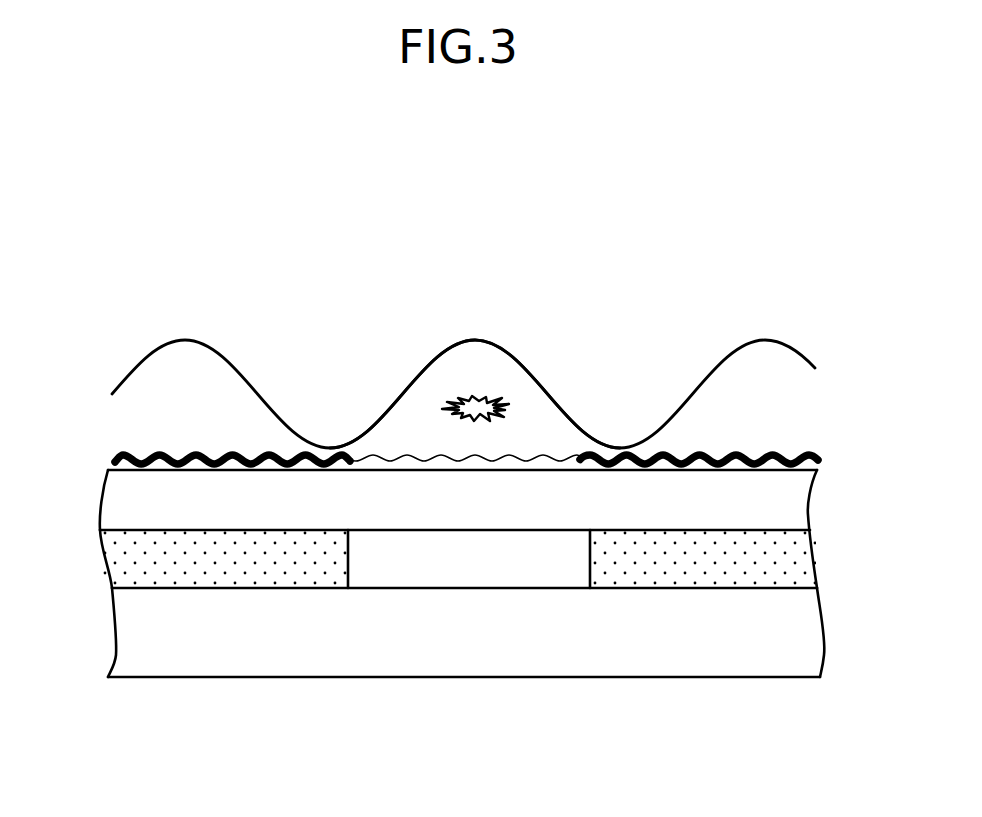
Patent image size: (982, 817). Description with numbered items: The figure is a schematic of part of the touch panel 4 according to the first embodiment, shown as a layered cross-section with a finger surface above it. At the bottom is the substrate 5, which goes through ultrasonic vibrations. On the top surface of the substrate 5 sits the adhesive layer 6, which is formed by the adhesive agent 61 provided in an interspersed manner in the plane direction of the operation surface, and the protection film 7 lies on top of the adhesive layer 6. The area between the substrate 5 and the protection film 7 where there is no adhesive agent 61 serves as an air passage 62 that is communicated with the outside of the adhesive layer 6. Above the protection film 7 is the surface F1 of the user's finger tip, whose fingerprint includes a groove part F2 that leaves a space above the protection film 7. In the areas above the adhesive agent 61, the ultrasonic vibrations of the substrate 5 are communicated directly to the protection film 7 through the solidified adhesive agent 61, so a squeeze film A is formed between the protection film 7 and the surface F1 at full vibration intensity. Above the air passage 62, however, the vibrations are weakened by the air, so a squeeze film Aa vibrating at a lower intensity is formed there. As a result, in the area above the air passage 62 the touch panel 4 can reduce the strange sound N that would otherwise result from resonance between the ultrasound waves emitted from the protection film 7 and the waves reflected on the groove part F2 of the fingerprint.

The touch panel 4 is at (679, 208).
The substrate 5 is at (112, 649).
The adhesive layer 6 is at (90, 555).
The adhesive agent 61 is at (220, 573).
The air passage 62 is at (524, 574).
The protection film 7 is at (100, 502).
The squeeze film A is at (787, 450).
The squeeze film Aa is at (425, 449).
The surface of the finger tip F1 is at (160, 345).
The groove part of the fingerprint F2 is at (455, 358).
The strange sound N is at (495, 396).